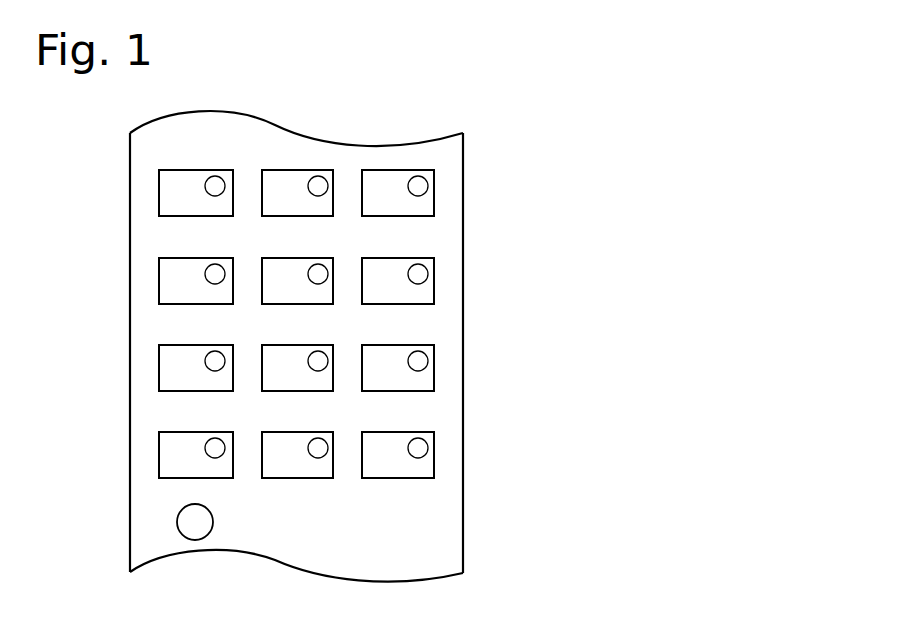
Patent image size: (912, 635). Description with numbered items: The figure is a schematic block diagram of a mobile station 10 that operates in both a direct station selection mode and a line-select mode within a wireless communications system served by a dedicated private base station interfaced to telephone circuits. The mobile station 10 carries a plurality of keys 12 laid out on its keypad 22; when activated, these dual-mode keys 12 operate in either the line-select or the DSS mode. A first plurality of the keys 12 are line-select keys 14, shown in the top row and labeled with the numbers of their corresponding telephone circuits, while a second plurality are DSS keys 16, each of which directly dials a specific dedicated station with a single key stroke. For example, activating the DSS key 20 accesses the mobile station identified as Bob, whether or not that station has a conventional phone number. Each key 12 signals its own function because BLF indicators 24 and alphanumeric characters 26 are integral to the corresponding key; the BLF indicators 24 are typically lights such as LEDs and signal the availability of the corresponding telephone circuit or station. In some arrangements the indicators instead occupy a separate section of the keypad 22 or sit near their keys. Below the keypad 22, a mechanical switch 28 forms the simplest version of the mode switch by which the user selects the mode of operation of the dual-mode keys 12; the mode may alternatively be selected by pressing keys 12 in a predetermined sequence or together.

The mobile station 10 is at (450, 97).
The keys 12 is at (456, 324).
The line-select keys 14 is at (518, 193).
The DSS keys 16 is at (401, 380).
The DSS key 20 is at (383, 348).
The keypad 22 is at (312, 537).
The BLF indicators 24 is at (416, 176).
The alphanumeric characters 26 is at (159, 281).
The mechanical switch 28 is at (197, 528).